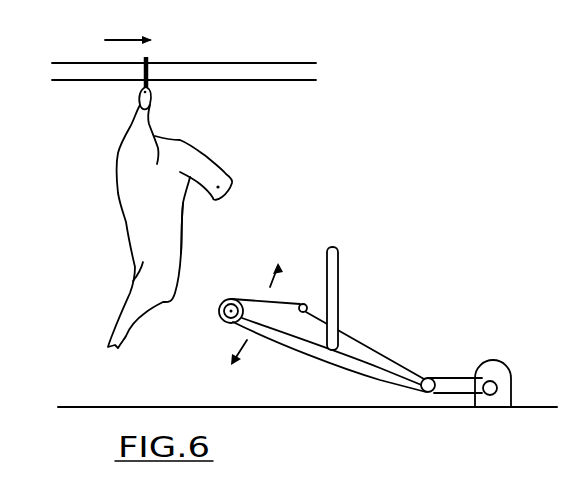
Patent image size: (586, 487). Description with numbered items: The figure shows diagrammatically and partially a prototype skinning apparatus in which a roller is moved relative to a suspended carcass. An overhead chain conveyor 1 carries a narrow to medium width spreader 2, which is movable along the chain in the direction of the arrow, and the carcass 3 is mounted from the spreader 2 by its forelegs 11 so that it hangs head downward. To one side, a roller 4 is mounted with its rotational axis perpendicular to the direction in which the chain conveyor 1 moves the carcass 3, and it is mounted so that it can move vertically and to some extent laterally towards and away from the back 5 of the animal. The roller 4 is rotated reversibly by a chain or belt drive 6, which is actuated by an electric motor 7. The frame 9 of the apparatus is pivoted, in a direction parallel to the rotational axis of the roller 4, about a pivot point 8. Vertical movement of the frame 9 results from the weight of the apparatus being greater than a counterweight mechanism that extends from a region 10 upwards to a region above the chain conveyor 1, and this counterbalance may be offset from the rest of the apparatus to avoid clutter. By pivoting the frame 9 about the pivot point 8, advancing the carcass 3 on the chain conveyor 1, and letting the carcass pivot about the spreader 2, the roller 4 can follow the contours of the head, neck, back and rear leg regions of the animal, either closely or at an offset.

The chain conveyor 1 is at (219, 73).
The spreader 2 is at (149, 67).
The carcass 3 is at (161, 217).
The roller 4 is at (231, 304).
The back 5 is at (170, 254).
The chain or belt drive 6 is at (384, 348).
The electric motor 7 is at (490, 381).
The pivot point 8 is at (430, 393).
The frame 9 is at (321, 343).
The region 10 is at (337, 335).
The forelegs 11 is at (149, 124).